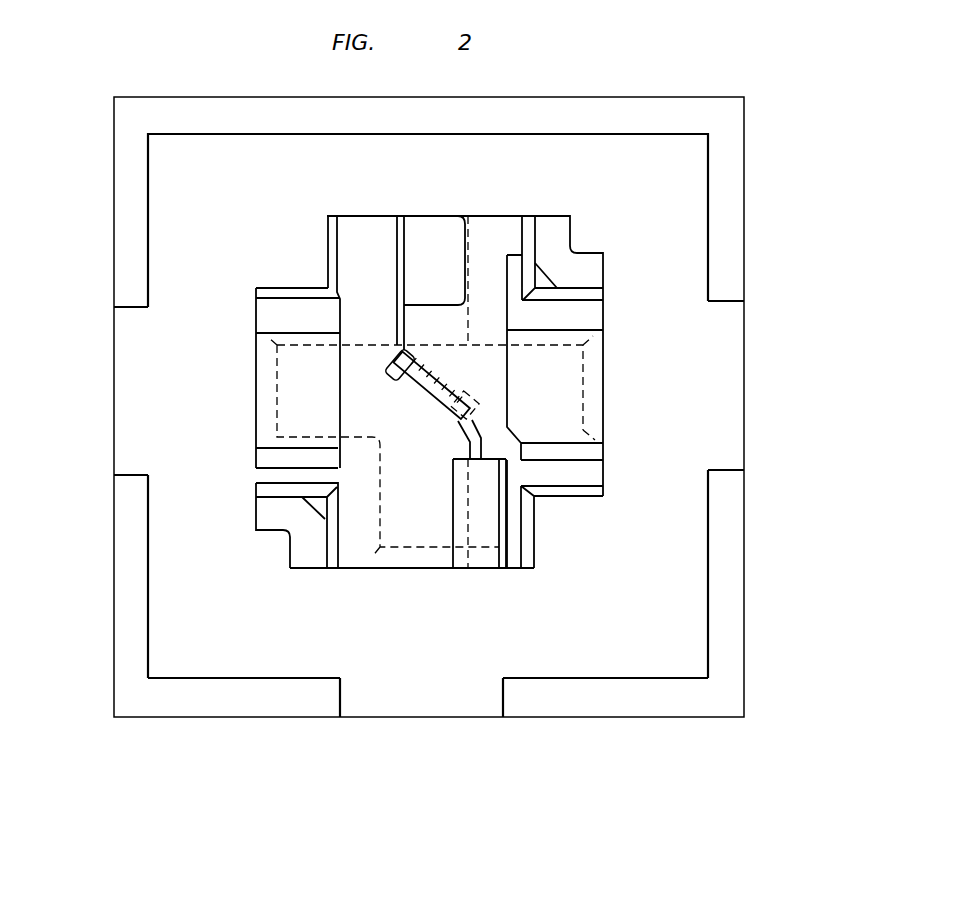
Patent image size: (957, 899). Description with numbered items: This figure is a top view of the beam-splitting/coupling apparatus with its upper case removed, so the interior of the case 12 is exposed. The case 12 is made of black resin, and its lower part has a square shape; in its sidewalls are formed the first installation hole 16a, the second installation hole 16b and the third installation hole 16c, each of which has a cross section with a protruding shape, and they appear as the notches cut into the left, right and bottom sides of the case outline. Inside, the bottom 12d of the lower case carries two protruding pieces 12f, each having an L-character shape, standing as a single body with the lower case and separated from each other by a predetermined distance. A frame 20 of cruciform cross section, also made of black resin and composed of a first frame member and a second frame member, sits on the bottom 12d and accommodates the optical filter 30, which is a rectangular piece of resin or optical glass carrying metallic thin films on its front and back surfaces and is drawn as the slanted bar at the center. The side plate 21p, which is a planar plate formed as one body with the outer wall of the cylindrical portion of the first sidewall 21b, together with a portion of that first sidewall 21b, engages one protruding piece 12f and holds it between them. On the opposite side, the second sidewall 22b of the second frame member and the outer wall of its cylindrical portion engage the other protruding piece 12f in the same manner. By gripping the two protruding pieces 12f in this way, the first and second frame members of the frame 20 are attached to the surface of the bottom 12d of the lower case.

The case 12 is at (745, 181).
The bottom 12d is at (603, 647).
The protruding piece 12f is at (557, 247).
The first installation hole 16a is at (128, 308).
The second installation hole 16b is at (727, 303).
The third installation hole 16c is at (500, 697).
The frame 20 is at (552, 204).
The first sidewall 21b is at (323, 543).
The side plate 21p is at (262, 473).
The second sidewall 22b is at (537, 232).
The optical filter 30 is at (438, 380).